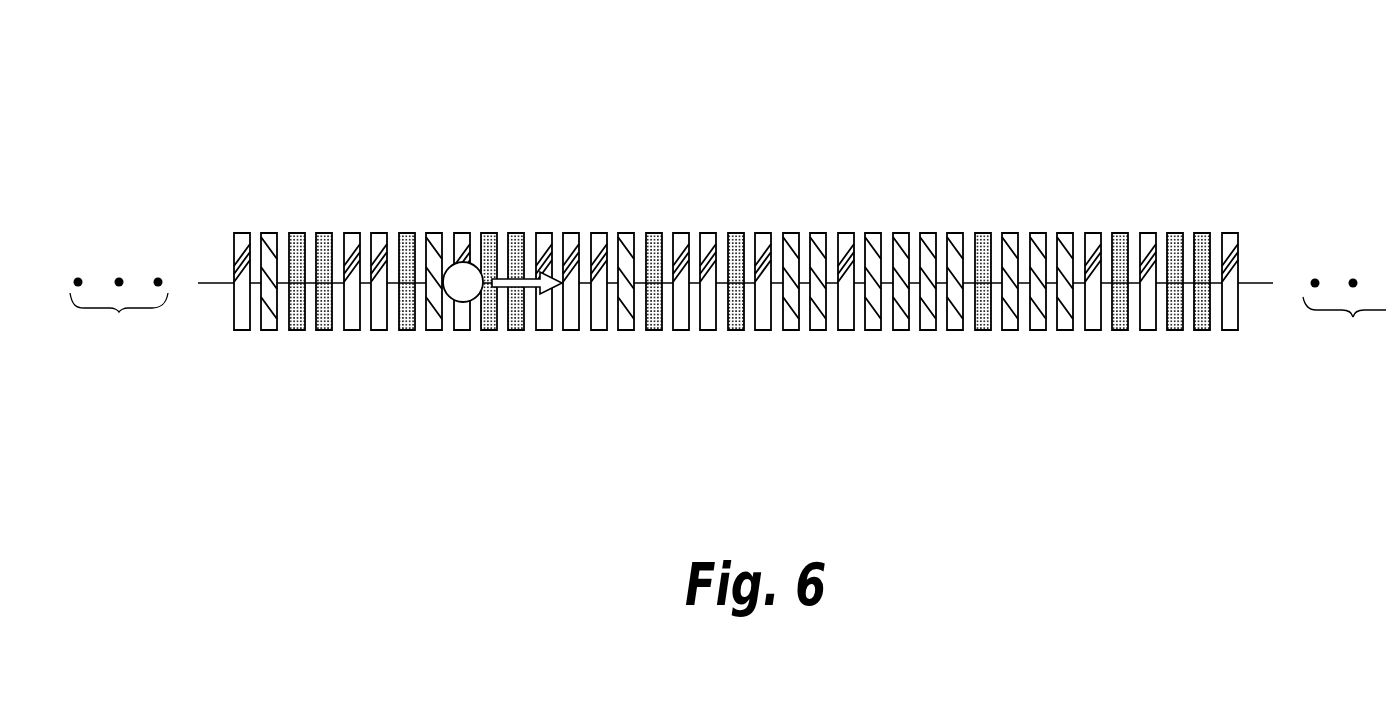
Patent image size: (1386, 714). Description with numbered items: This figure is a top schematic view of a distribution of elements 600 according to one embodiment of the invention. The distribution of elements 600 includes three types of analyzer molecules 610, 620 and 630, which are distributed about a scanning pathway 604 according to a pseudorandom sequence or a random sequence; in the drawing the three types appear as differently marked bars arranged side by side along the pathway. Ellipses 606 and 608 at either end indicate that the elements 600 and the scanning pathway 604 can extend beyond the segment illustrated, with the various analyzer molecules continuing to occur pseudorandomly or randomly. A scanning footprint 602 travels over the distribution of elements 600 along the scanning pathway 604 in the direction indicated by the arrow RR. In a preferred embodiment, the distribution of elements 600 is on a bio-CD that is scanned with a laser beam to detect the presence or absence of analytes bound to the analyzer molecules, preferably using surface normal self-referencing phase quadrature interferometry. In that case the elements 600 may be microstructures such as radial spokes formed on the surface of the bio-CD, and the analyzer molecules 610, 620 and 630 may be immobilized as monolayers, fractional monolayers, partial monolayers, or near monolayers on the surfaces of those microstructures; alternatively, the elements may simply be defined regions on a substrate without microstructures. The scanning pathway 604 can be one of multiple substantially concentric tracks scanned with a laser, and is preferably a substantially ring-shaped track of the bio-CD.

The distribution of elements 600 is at (728, 250).
The scanning footprint 602 is at (451, 263).
The scanning pathway 604 is at (213, 283).
The ellipses 606 is at (118, 311).
The ellipses 608 is at (1353, 318).
The analyzer molecules 610 is at (240, 331).
The analyzer molecules 620 is at (1176, 331).
The analyzer molecules 630 is at (270, 233).
The arrow RR is at (508, 236).